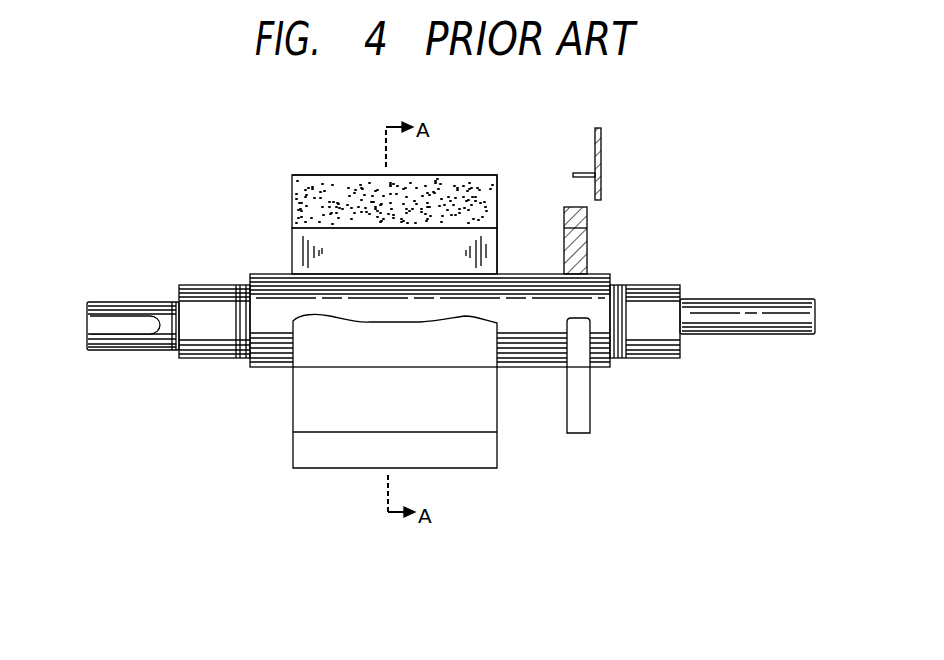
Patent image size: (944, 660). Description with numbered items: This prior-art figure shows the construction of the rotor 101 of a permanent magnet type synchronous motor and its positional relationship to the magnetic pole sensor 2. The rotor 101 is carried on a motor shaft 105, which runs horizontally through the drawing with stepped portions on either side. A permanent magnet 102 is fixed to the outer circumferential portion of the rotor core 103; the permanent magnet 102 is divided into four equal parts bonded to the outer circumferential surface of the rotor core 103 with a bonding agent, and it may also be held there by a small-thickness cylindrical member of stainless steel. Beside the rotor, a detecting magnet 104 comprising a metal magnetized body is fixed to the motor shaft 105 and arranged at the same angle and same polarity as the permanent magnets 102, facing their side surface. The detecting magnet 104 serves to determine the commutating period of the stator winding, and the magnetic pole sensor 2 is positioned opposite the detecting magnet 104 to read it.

The rotor 101 is at (303, 175).
The permanent magnet 102 is at (491, 160).
The rotor core 103 is at (498, 234).
The detecting magnet 104 is at (590, 220).
The motor shaft 105 is at (660, 280).
The magnetic pole sensor 2 is at (603, 140).